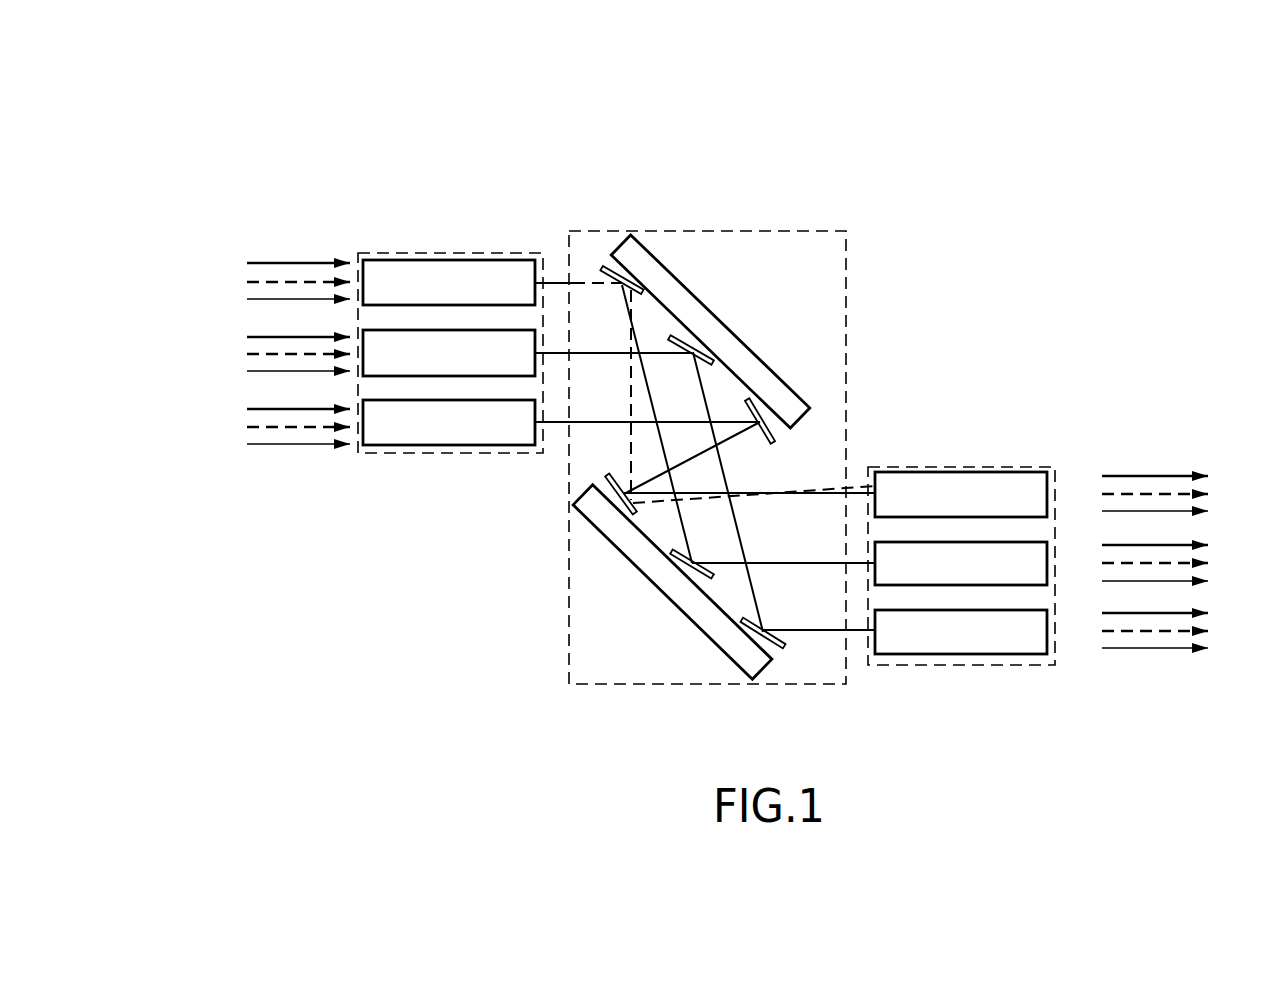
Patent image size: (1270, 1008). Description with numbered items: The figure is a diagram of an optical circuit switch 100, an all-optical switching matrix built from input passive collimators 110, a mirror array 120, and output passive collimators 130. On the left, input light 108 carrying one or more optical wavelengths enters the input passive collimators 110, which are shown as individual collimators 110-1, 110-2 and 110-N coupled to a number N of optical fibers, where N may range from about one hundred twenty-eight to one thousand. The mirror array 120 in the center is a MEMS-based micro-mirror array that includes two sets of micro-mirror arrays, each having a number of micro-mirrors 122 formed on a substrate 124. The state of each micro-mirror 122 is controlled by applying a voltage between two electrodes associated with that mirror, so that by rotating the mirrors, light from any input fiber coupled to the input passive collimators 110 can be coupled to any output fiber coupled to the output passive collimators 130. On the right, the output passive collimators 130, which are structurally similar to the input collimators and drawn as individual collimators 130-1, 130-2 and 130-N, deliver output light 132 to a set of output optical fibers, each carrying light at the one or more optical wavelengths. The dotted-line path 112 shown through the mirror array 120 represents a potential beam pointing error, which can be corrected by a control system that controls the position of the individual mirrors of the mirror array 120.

The optical circuit switch 100 is at (224, 215).
The input light 108 is at (200, 468).
The input passive collimators 110 is at (390, 455).
The input passive collimator 110-1 is at (496, 270).
The input passive collimator 110-2 is at (411, 343).
The input passive collimator 110-N is at (458, 433).
The dotted-line path 112 is at (612, 452).
The mirror array 120 is at (822, 230).
The micro-mirrors 122 is at (772, 405).
The substrate 124 is at (695, 296).
The output passive collimators 130 is at (922, 665).
The output passive collimator 130-1 is at (1025, 483).
The output passive collimator 130-2 is at (932, 553).
The output passive collimator 130-N is at (1032, 642).
The output light 132 is at (1183, 449).